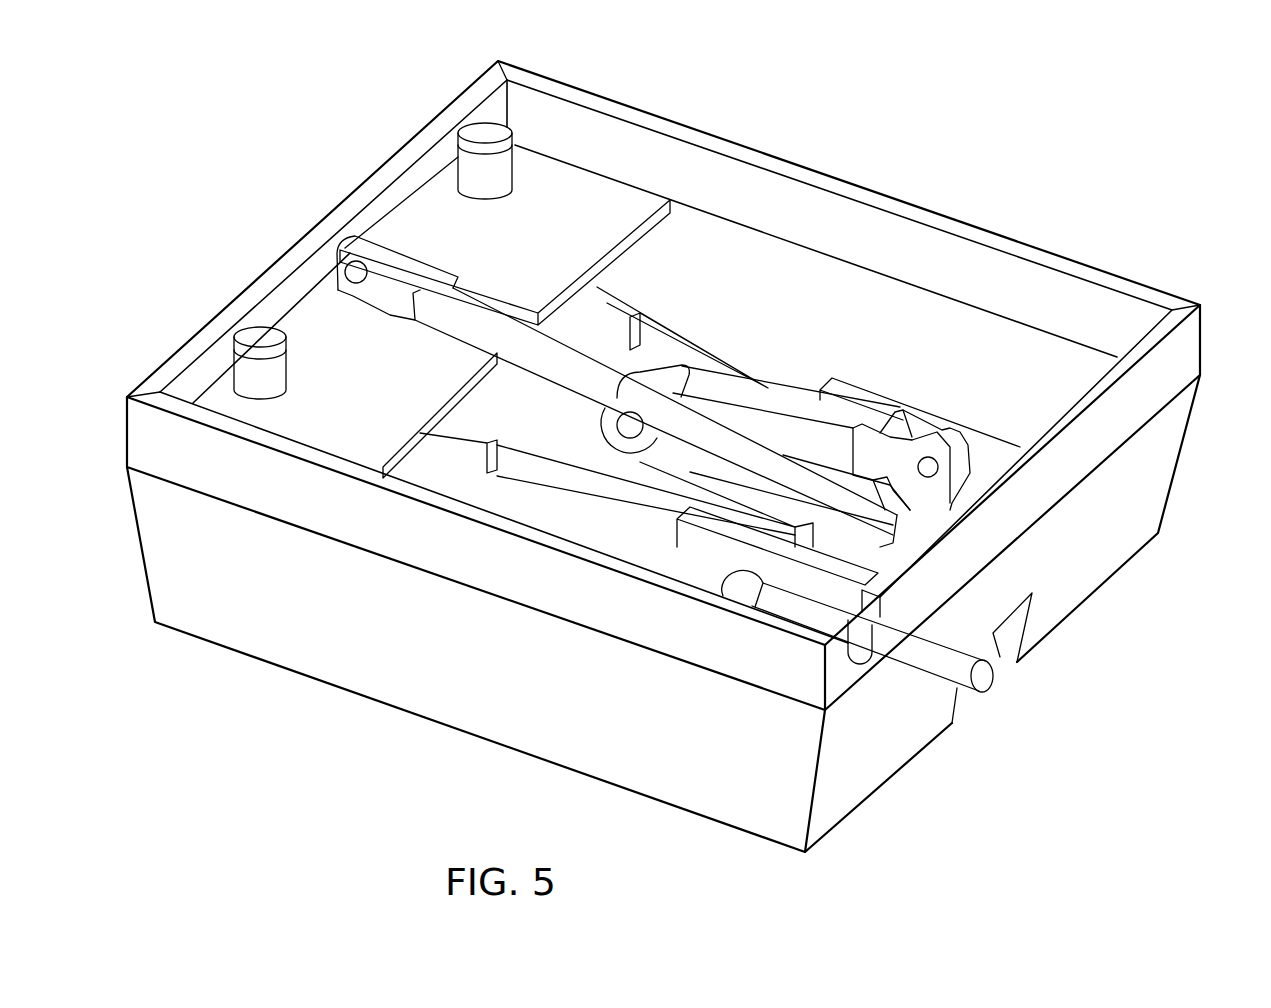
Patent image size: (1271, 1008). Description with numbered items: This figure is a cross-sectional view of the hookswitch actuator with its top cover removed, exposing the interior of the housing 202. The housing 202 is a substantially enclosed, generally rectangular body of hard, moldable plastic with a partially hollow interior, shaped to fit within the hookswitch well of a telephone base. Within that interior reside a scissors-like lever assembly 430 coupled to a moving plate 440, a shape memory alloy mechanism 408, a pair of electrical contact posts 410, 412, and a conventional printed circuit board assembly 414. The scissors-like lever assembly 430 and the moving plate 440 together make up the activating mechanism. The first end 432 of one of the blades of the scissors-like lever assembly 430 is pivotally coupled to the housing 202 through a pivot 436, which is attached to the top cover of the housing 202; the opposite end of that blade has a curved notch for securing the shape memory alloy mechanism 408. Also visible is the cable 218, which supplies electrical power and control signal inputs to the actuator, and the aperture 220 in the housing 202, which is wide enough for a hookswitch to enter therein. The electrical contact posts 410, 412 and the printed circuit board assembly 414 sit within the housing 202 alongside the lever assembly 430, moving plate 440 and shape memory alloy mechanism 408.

The housing 202 is at (1108, 538).
The cable 218 is at (982, 677).
The aperture 220 is at (967, 700).
The shape memory alloy mechanism 408 is at (562, 475).
The electrical contact post 410 is at (278, 372).
The electrical contact post 412 is at (487, 130).
The printed circuit board assembly 414 is at (588, 212).
The scissors-like lever assembly 430 is at (790, 400).
The first end 432 is at (386, 250).
The pivot 436 is at (345, 278).
The moving plate 440 is at (712, 548).